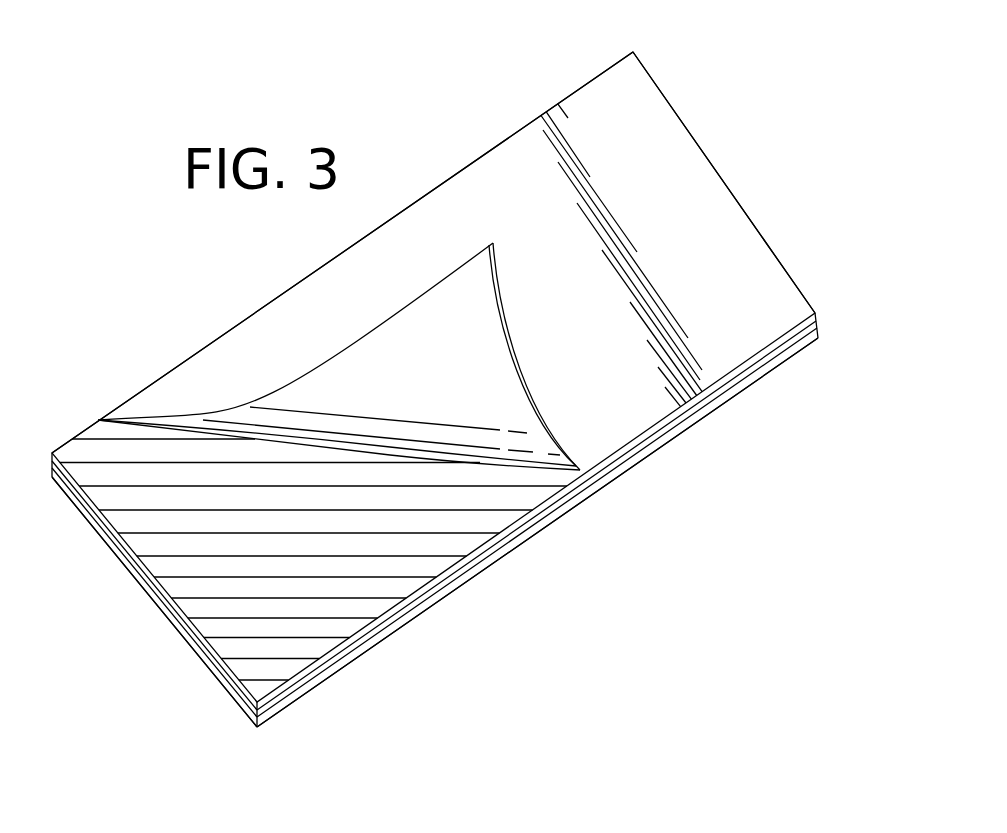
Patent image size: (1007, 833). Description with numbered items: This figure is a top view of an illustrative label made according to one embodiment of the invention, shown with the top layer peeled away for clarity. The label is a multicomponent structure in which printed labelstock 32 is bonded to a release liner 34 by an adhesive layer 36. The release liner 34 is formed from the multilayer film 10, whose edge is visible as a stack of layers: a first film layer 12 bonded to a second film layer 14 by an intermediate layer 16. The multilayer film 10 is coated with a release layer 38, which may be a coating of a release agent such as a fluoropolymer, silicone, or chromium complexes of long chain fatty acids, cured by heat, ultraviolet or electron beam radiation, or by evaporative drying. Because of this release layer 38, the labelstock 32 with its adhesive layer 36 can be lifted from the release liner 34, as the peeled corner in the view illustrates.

The multilayer structure 10 is at (828, 342).
The first film layer 12 is at (763, 375).
The second film layer 14 is at (635, 445).
The intermediate layer 16 is at (782, 355).
The printed labelstock 32 is at (725, 212).
The release liner 34 is at (186, 660).
The adhesive layer 36 is at (381, 348).
The release layer 38 is at (413, 582).